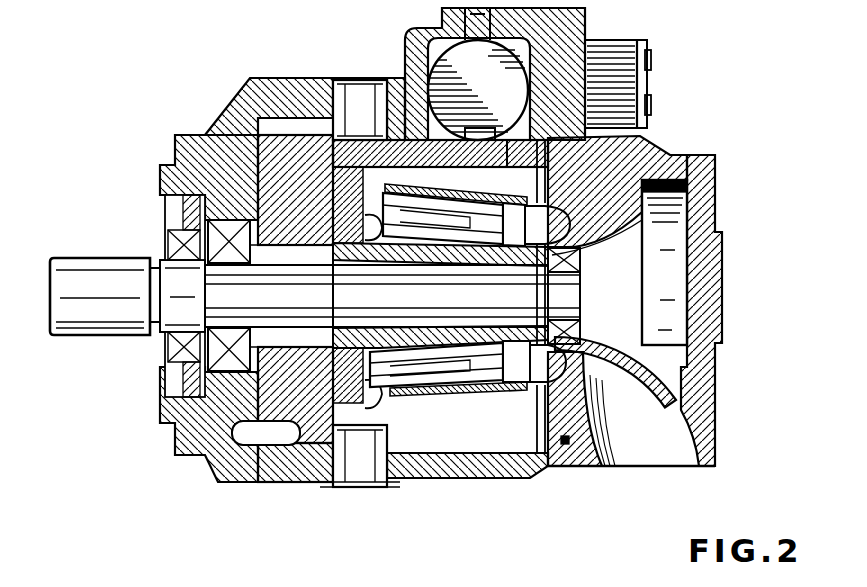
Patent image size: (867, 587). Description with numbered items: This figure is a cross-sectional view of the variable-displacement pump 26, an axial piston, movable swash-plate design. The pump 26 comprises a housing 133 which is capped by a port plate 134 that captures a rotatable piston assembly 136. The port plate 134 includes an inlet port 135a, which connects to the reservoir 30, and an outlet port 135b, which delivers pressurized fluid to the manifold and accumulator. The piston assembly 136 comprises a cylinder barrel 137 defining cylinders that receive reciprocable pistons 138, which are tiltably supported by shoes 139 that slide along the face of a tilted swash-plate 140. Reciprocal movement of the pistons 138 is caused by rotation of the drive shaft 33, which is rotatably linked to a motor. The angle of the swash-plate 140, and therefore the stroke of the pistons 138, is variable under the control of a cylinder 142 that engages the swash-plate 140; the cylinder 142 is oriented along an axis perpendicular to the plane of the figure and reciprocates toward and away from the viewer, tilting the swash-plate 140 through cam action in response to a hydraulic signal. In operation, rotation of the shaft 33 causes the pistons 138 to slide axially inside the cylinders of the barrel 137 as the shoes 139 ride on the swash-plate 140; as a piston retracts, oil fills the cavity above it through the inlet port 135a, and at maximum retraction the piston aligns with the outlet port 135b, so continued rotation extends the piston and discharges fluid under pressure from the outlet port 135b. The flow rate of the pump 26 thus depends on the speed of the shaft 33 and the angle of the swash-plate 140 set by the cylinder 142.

The pump 26 is at (92, 74).
The reservoir 30 is at (165, 3).
The drive shaft 33 is at (123, 262).
The housing 133 is at (305, 76).
The port plate 134 is at (652, 140).
The inlet port 135a is at (698, 190).
The outlet port 135b is at (640, 450).
The piston assembly 136 is at (458, 432).
The cylinder barrel 137 is at (456, 198).
The pistons 138 is at (392, 398).
The shoes 139 is at (372, 82).
The swash-plate 140 is at (245, 128).
The cylinder 142 is at (515, 92).